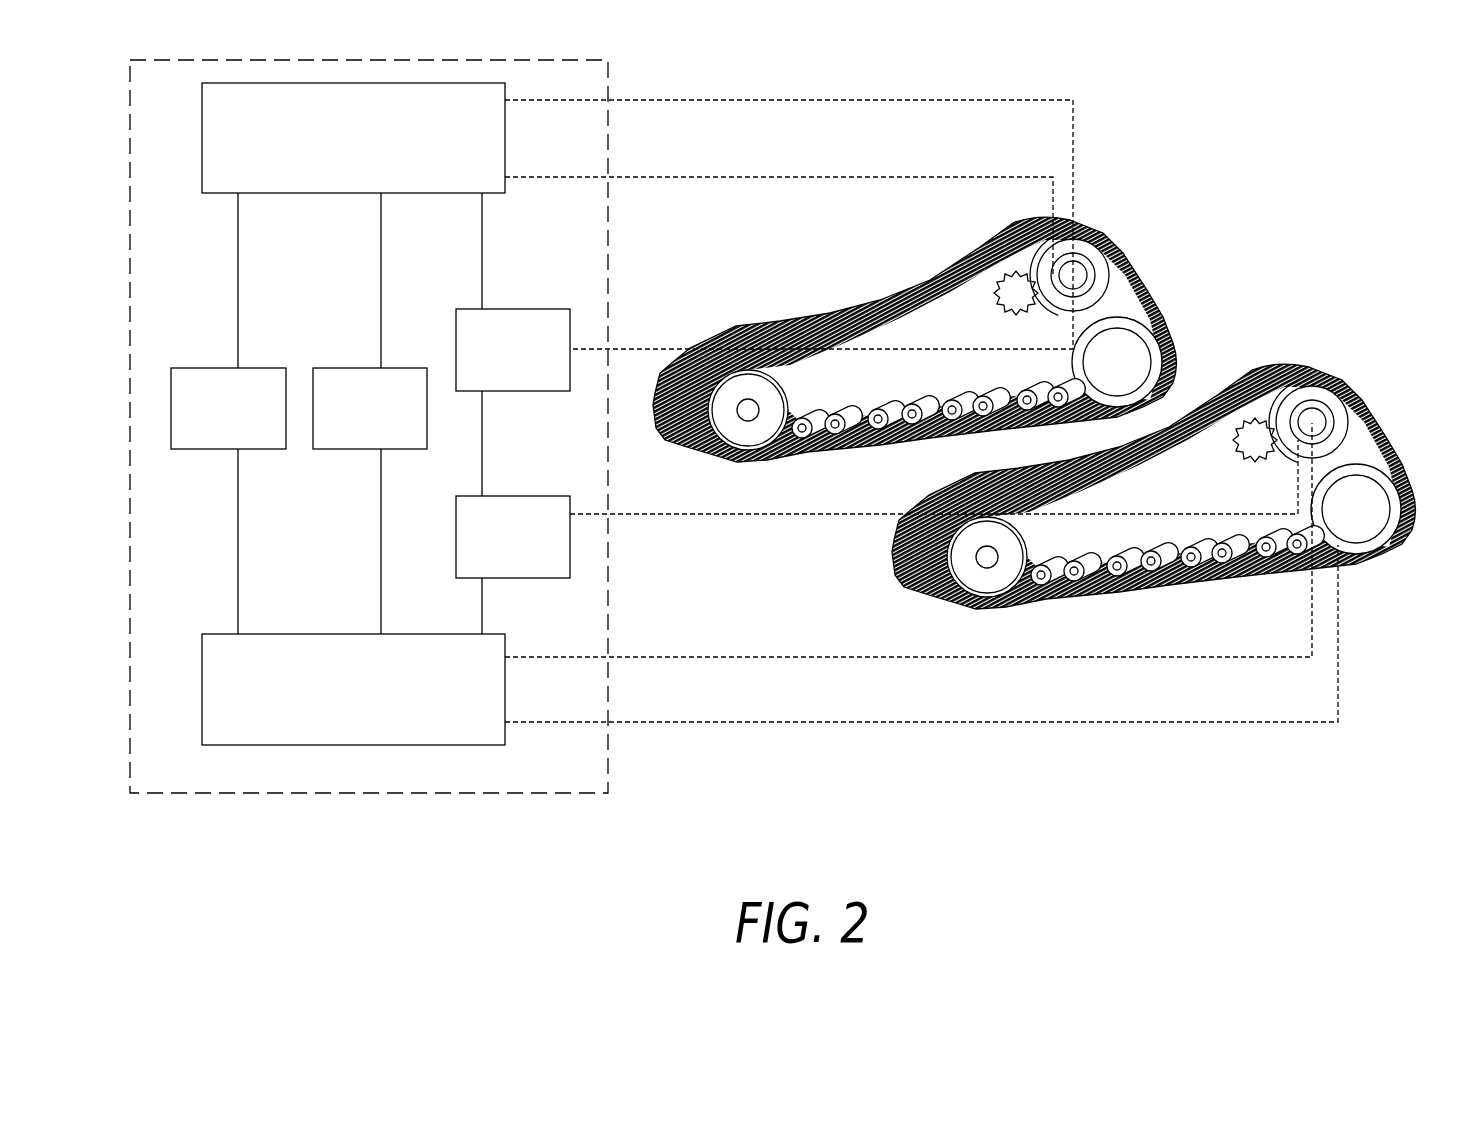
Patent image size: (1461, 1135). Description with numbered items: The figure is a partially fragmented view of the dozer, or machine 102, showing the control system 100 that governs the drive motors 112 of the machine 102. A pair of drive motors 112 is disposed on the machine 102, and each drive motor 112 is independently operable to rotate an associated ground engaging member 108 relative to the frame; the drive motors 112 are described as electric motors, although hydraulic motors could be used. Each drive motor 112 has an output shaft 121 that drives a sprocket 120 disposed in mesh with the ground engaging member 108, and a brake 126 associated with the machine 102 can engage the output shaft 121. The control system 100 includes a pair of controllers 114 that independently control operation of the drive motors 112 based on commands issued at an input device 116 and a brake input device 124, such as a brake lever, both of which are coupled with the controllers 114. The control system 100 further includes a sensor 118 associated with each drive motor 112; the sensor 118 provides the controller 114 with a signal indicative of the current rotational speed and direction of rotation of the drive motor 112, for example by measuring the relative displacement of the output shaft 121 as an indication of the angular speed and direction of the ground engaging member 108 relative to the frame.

The control system 100 is at (188, 98).
The machine 102 is at (1335, 203).
The ground engaging member 108 is at (963, 252).
The drive motor 112 is at (1109, 251).
The controller 114 is at (380, 154).
The input device 116 is at (243, 424).
The sensor 118 is at (528, 364).
The sprocket 120 is at (1012, 310).
The output shaft 121 is at (1112, 286).
The brake input device 124 is at (381, 424).
The brake 126 is at (1118, 257).